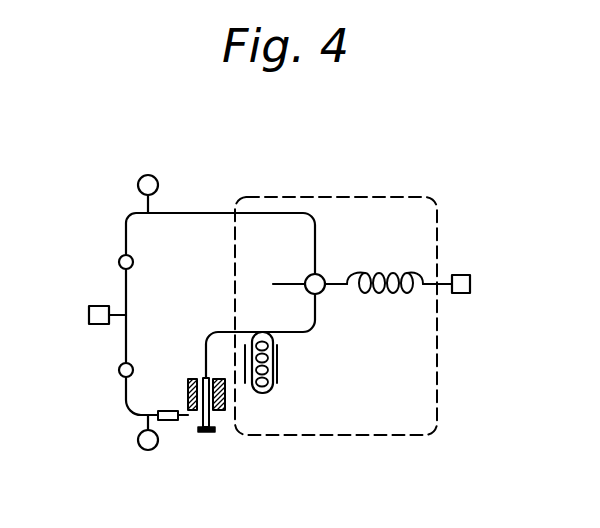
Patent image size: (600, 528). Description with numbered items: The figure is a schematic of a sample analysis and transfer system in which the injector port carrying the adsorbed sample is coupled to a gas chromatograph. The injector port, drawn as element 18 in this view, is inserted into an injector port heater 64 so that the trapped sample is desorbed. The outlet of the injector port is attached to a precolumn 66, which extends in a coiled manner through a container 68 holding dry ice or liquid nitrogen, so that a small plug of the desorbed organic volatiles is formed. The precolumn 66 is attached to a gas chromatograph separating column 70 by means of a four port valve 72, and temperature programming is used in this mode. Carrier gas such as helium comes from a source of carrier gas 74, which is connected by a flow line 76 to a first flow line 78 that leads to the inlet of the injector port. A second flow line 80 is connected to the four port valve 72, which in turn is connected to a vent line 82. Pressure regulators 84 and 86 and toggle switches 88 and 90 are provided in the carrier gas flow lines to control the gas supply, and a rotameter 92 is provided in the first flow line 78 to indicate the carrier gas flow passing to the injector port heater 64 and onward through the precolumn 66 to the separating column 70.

The switch plunger 18 is at (217, 420).
The injector port heater 64 is at (188, 392).
The precolumn 66 is at (247, 332).
The container 68 is at (277, 365).
The gas chromatograph separating column 70 is at (382, 297).
The four port valve 72 is at (323, 277).
The source of carrier gas 74 is at (88, 318).
The flow line 76 is at (121, 306).
The first flow line 78 is at (126, 340).
The second flow line 80 is at (272, 218).
The vent line 82 is at (290, 282).
The pressure regulator 84 is at (138, 183).
The pressure regulator 86 is at (138, 440).
The toggle switch 88 is at (119, 260).
The toggle switch 90 is at (119, 369).
The rotameter 92 is at (175, 420).